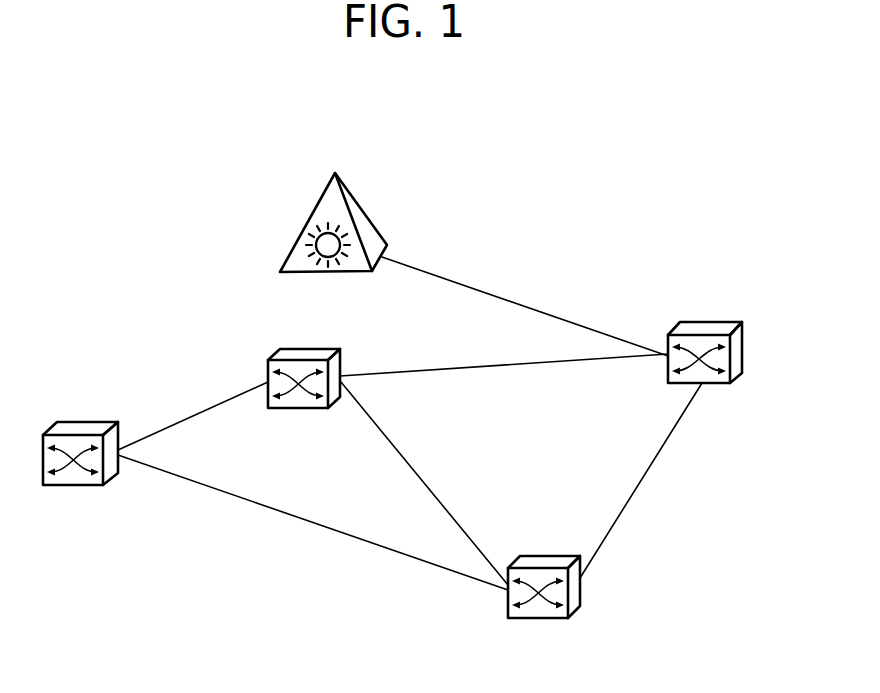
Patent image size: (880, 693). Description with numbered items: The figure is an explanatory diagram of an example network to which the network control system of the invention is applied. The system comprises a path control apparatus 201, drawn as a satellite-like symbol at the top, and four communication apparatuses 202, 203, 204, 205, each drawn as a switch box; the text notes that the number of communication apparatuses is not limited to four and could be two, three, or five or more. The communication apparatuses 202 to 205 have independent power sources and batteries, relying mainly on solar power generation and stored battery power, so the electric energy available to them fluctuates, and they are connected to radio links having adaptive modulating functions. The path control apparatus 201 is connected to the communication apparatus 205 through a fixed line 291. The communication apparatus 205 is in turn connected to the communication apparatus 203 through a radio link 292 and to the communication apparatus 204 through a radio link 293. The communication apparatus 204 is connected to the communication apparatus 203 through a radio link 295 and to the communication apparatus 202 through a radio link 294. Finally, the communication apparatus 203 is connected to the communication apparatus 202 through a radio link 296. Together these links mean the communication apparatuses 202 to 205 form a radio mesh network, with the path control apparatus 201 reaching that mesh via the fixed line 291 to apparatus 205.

The path control apparatus 201 is at (361, 205).
The communication apparatus 202 is at (80, 486).
The communication apparatus 203 is at (295, 347).
The communication apparatus 204 is at (545, 619).
The communication apparatus 205 is at (715, 321).
The fixed line 291 is at (527, 307).
The radio link 292 is at (447, 367).
The radio link 293 is at (647, 475).
The radio link 294 is at (295, 517).
The radio link 295 is at (400, 452).
The radio link 296 is at (187, 418).